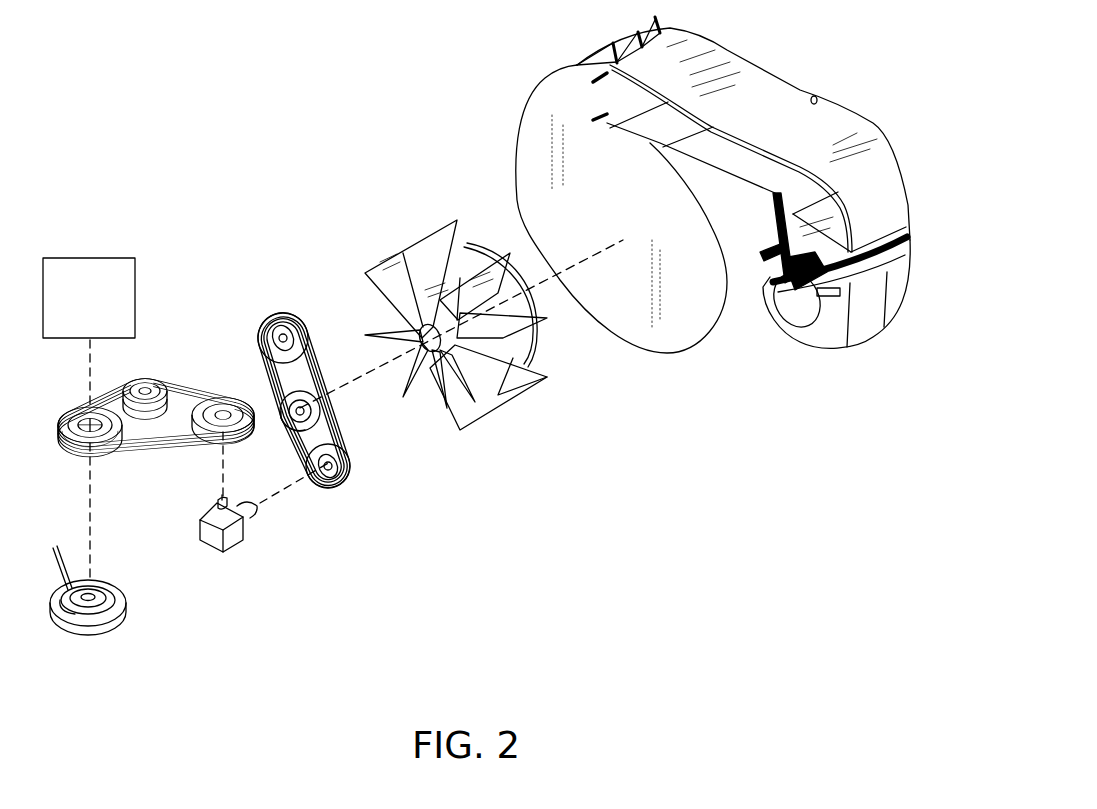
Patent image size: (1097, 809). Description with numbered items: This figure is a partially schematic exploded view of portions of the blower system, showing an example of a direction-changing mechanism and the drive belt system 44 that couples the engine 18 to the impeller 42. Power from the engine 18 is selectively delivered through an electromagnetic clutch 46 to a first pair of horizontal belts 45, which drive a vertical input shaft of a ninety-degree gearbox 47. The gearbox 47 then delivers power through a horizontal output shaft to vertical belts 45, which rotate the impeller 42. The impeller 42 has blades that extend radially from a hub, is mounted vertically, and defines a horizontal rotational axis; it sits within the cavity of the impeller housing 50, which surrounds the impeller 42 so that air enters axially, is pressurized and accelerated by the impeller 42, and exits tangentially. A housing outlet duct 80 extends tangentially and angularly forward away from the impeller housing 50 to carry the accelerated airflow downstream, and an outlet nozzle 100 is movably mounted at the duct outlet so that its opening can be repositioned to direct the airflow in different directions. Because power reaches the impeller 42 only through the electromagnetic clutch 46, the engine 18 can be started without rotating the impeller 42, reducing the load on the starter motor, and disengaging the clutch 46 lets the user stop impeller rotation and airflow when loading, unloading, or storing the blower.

The outlet nozzle 100 is at (630, 212).
The impeller housing 50 is at (517, 141).
The housing outlet duct 80 is at (777, 74).
The impeller 42 is at (383, 265).
The drive belt system 44 is at (188, 327).
The belts 45 is at (188, 398).
The engine 18 is at (103, 310).
The electromagnetic clutch 46 is at (120, 617).
The 90-degree gearbox 47 is at (233, 538).